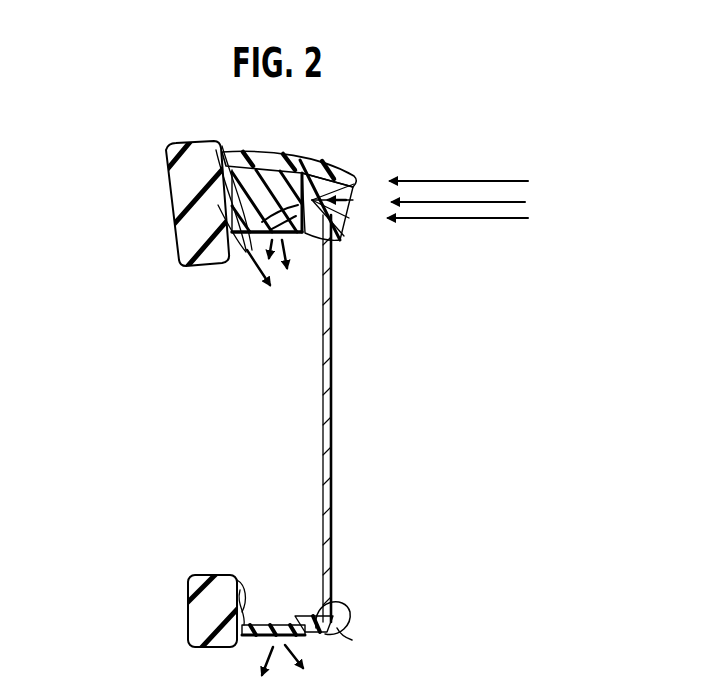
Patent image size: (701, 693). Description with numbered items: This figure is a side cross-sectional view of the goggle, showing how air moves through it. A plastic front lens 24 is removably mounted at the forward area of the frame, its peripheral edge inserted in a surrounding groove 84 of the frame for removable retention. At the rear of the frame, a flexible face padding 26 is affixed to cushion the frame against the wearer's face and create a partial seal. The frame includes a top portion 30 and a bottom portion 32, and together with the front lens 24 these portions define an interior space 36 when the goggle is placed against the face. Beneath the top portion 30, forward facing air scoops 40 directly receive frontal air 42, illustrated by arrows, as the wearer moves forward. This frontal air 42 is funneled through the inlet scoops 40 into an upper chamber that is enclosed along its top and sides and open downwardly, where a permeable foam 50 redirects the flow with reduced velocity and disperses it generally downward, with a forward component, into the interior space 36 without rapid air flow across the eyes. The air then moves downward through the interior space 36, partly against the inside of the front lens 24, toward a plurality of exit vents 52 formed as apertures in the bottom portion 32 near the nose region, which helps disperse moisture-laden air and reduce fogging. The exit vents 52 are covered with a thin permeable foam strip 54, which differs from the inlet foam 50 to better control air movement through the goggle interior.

The front lens 24 is at (331, 381).
The face padding 26 is at (170, 185).
The top portion 30 is at (289, 156).
The bottom portion 32 is at (352, 640).
The interior space 36 is at (292, 433).
The air scoops 40 is at (358, 178).
The frontal air 42 is at (478, 181).
The permeable foam 50 is at (298, 160).
The exit vents 52 is at (278, 583).
The permeable foam strip 54 is at (255, 638).
The surrounding groove 84 is at (330, 598).